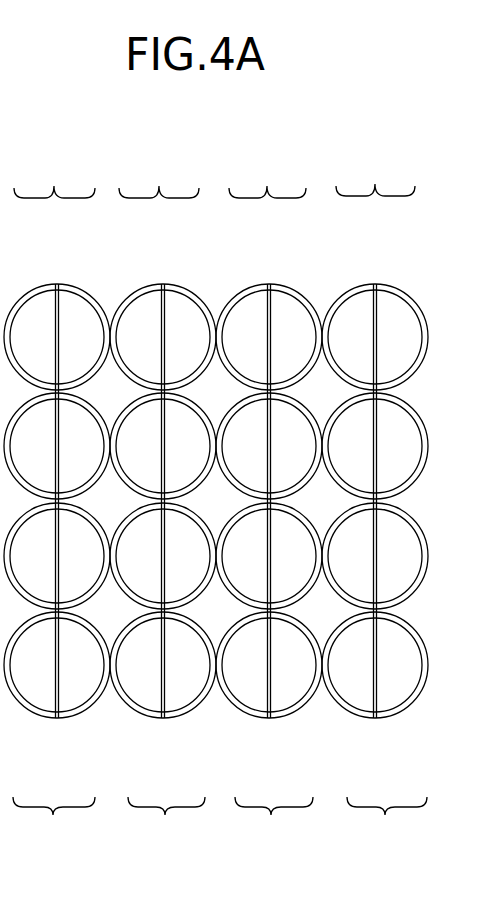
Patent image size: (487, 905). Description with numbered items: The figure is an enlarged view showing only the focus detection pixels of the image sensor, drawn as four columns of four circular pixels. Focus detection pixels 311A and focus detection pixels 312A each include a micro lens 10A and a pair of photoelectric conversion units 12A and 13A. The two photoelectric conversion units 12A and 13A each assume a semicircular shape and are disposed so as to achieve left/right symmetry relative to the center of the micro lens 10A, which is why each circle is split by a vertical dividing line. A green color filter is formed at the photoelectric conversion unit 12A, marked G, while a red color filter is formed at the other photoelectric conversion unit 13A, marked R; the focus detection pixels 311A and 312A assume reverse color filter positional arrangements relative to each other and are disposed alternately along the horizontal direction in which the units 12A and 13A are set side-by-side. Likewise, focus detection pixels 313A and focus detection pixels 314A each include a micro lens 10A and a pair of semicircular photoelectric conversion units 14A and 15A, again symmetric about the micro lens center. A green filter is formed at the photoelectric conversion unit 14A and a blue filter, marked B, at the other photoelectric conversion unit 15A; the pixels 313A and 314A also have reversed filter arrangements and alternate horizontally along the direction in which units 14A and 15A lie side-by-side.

The micro lens 10A is at (50, 284).
The photoelectric conversion unit 12A is at (33, 308).
The photoelectric conversion unit 13A is at (89, 306).
The photoelectric conversion unit 14A is at (31, 695).
The photoelectric conversion unit 15A is at (88, 694).
The focus detection pixel 311A is at (160, 176).
The focus detection pixel 312A is at (267, 174).
The focus detection pixel 313A is at (163, 818).
The focus detection pixel 314A is at (277, 818).